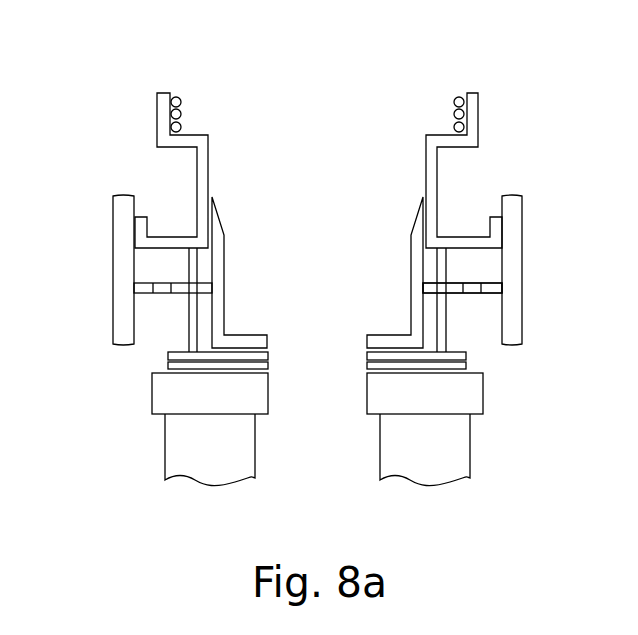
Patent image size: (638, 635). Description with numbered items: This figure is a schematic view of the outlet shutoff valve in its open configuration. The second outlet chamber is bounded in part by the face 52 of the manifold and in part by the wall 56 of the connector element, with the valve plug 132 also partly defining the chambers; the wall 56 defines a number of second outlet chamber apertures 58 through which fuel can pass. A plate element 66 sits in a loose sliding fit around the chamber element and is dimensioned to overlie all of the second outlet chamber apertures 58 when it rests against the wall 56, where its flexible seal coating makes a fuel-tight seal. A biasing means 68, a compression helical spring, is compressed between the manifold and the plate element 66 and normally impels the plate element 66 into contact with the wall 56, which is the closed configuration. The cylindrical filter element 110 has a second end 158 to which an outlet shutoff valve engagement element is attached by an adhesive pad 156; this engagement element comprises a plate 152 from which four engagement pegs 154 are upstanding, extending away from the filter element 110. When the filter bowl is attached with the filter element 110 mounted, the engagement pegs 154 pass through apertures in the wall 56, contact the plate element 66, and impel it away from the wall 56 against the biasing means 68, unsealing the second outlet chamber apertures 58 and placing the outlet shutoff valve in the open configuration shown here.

The face 52 is at (124, 267).
The wall 56 is at (492, 288).
The second outlet chamber apertures 58 is at (165, 290).
The plate element 66 is at (172, 242).
The biasing means 68 is at (177, 96).
The filter element 110 is at (231, 459).
The valve plug 132 is at (392, 248).
The plate 152 is at (198, 357).
The engagement pegs 154 is at (193, 327).
The adhesive pad 156 is at (455, 365).
The second end 158 is at (462, 400).